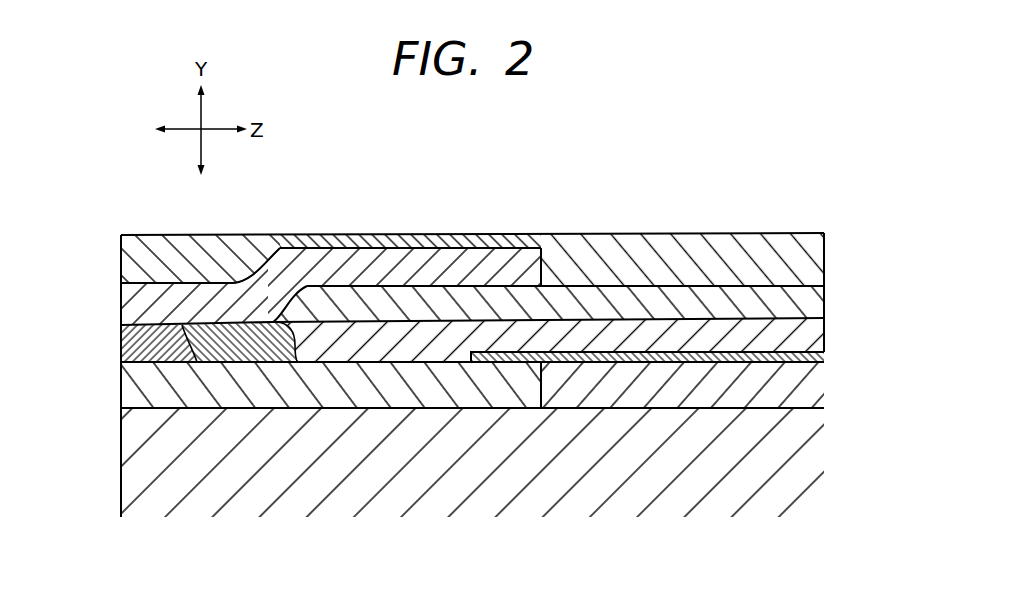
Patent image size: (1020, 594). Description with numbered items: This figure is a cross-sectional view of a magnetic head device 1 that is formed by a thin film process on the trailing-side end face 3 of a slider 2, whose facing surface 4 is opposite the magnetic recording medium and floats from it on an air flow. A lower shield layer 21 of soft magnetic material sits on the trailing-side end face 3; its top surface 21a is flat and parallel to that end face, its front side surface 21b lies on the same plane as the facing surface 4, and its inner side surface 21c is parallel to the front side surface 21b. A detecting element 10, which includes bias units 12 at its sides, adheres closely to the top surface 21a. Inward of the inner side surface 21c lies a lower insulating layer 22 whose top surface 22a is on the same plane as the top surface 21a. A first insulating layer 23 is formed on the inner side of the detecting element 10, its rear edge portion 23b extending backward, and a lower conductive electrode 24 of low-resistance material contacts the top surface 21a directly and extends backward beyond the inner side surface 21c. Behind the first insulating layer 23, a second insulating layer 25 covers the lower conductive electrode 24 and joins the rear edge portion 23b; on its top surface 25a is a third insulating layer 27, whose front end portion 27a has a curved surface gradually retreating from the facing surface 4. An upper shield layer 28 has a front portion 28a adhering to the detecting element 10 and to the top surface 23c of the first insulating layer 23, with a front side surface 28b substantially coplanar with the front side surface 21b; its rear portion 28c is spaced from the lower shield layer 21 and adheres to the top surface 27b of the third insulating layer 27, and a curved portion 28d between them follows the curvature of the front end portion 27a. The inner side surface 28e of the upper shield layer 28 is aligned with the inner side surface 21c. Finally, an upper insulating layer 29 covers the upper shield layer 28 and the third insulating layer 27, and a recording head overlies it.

The magnetic head device 1 is at (521, 190).
The slider 2 is at (806, 487).
The trailing-side end face 3 is at (473, 408).
The facing surface 4 is at (121, 476).
The detecting element 10 is at (113, 343).
The bias unit 12 is at (140, 349).
The lower shield layer 21 is at (284, 388).
The top surface 21a is at (343, 362).
The front side surface 21b is at (121, 378).
The inner side surface 21c is at (545, 402).
The lower insulating layer 22 is at (810, 385).
The top surface 22a is at (737, 363).
The first insulating layer 23 is at (236, 353).
The rear edge portion 23b is at (296, 362).
The top surface 23c is at (228, 325).
The lower conductive electrode 24 is at (817, 353).
The second insulating layer 25 is at (424, 352).
The top surface 25a is at (500, 316).
The third insulating layer 27 is at (740, 303).
The front end portion 27a is at (287, 280).
The top surface 27b is at (705, 285).
The upper shield layer 28 is at (195, 298).
The front portion 28a is at (146, 300).
The front side surface 28b is at (121, 311).
The rear portion 28c is at (432, 270).
The curved portion 28d is at (276, 268).
The inner side surface 28e is at (543, 268).
The upper insulating layer 29 is at (642, 247).